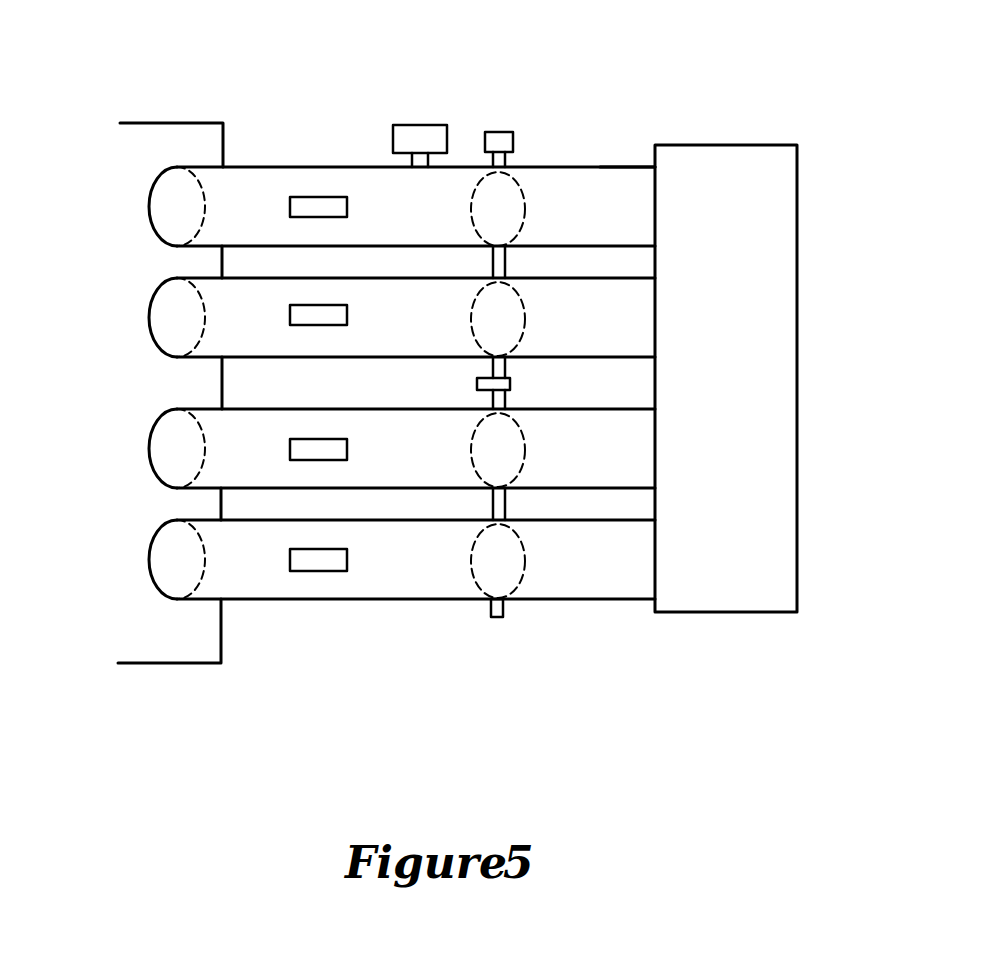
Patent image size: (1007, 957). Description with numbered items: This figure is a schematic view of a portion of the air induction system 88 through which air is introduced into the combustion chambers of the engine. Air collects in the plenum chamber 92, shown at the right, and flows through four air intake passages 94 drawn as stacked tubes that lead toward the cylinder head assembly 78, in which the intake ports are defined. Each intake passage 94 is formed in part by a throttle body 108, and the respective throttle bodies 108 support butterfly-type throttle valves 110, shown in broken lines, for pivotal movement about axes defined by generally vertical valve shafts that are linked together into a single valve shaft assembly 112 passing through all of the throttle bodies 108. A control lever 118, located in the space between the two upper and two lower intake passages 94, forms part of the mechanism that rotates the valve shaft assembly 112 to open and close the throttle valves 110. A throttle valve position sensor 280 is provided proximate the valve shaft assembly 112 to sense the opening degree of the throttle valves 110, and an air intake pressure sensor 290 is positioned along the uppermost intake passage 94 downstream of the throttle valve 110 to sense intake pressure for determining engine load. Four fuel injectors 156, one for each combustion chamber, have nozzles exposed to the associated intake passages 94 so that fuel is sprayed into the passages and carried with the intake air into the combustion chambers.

The cylinder head assembly 78 is at (160, 142).
The air intake passages 94 is at (257, 183).
The air intake pressure sensor 290 is at (412, 138).
The throttle valve position sensor 280 is at (496, 132).
The throttle bodies 108 is at (622, 168).
The plenum chamber 92 is at (728, 168).
The air induction system 88 is at (822, 118).
The fuel injectors 156 is at (315, 207).
The throttle valves 110 is at (525, 212).
The control lever 118 is at (477, 383).
The valve shaft assembly 112 is at (490, 608).